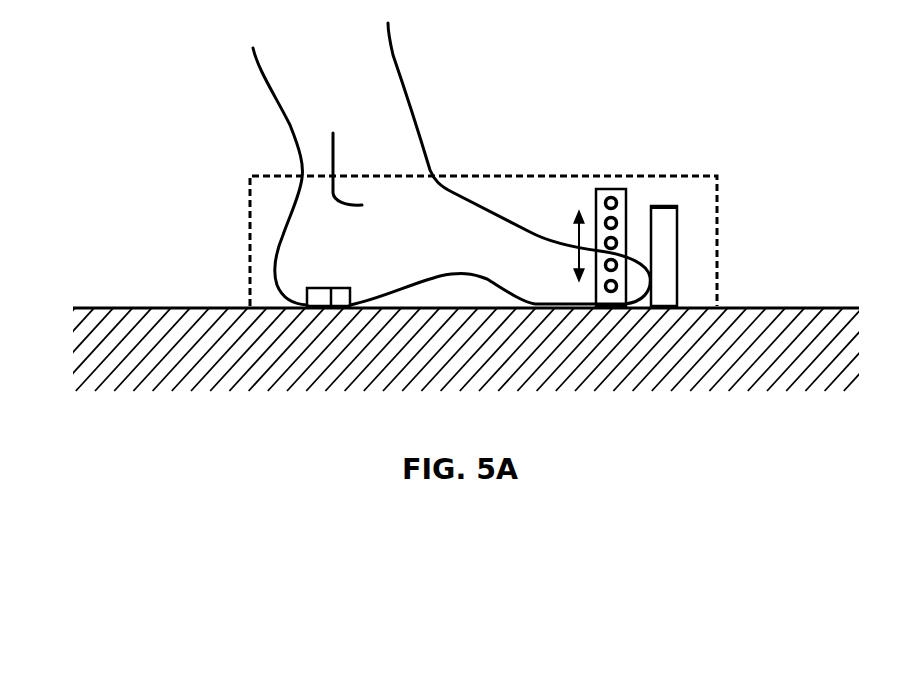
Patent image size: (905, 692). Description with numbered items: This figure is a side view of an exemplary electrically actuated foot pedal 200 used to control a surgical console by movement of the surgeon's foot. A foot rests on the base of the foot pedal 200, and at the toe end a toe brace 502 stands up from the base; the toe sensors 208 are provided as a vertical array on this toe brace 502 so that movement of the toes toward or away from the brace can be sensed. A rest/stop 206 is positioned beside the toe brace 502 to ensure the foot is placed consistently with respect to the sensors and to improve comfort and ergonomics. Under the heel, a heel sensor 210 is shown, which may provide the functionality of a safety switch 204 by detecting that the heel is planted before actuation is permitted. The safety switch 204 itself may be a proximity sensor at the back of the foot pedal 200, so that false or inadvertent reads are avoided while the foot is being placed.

The foot pedal 200 is at (457, 68).
The safety switch 204 is at (250, 305).
The toe and/or heel stop/rest 206 is at (659, 252).
The toe sensors 208 is at (599, 213).
The heel sensors 210 is at (320, 300).
The toe brace 502 is at (664, 220).